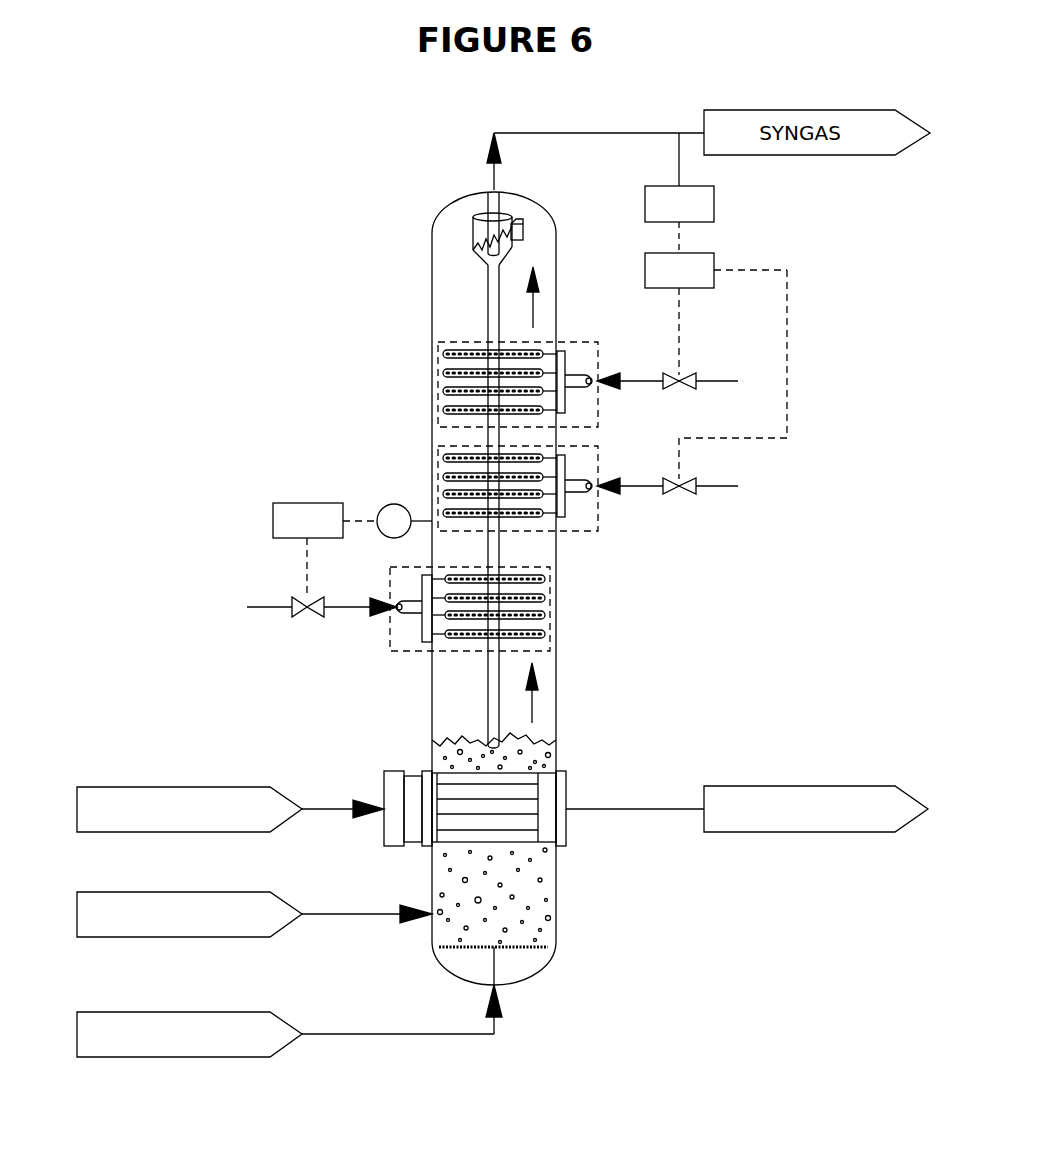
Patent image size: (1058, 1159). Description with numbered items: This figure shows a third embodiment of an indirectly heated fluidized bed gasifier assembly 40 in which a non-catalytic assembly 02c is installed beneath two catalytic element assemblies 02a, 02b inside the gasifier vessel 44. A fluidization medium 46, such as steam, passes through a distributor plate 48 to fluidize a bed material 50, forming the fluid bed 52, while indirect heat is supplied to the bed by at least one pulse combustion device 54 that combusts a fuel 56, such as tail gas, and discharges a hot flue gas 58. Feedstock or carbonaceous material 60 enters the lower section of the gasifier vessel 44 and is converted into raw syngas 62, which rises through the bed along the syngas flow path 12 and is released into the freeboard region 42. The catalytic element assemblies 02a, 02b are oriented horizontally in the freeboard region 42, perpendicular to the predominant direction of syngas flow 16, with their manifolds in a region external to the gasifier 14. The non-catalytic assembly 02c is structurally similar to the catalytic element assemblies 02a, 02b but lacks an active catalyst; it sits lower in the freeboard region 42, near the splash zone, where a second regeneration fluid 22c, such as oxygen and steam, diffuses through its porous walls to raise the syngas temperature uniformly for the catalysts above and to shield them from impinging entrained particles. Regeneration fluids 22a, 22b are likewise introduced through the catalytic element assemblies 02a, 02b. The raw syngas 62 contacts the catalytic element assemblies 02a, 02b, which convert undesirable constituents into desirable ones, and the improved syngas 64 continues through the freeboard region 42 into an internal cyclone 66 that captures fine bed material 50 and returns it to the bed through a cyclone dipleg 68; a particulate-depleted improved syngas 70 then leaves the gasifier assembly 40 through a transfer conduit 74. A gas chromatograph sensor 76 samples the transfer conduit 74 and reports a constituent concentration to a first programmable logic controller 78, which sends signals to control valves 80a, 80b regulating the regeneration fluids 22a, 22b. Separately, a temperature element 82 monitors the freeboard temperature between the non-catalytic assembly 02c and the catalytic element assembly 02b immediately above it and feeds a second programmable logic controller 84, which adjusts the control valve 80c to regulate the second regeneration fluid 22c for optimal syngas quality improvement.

The syngas flow path 12 is at (515, 315).
The gasifier 14 is at (572, 315).
The predominant direction of syngas flow 16 is at (576, 493).
The indirectly heated fluidized bed gasifier assembly 40 is at (432, 238).
The freeboard region 42 is at (452, 300).
The gasifier vessel 44 is at (452, 327).
The fluidization medium 46 is at (327, 1034).
The distributor plate 48 is at (548, 946).
The bed material 50 is at (548, 918).
The fluid bed 52 is at (548, 888).
The pulse combustion device 54 is at (395, 771).
The fuel 56 is at (327, 809).
The hot flue gas 58 is at (620, 809).
The feedstock or carbonaceous material 60 is at (327, 914).
The raw syngas 62 is at (532, 713).
The improved syngas 64 is at (533, 307).
The internal cyclone 66 is at (523, 228).
The cyclone dipleg 68 is at (488, 295).
The particulate-depleted improved syngas 70 is at (570, 133).
The transfer conduit 74 is at (620, 133).
The gas chromatograph sensor 76 is at (714, 202).
The first programmable logic controller 78 is at (714, 253).
The catalytic element assembly 02a is at (598, 363).
The catalytic element assembly 02b is at (598, 465).
The non-catalytic assembly 02c is at (390, 588).
The oxygen inlet 22a is at (632, 381).
The oxygen inlet 22b is at (632, 486).
The second regeneration fluid 22c is at (355, 607).
The control valve 80a is at (700, 395).
The control valve 80b is at (700, 500).
The control valve 80c is at (285, 591).
The temperature element 82 is at (394, 504).
The second programmable logic controller 84 is at (273, 503).